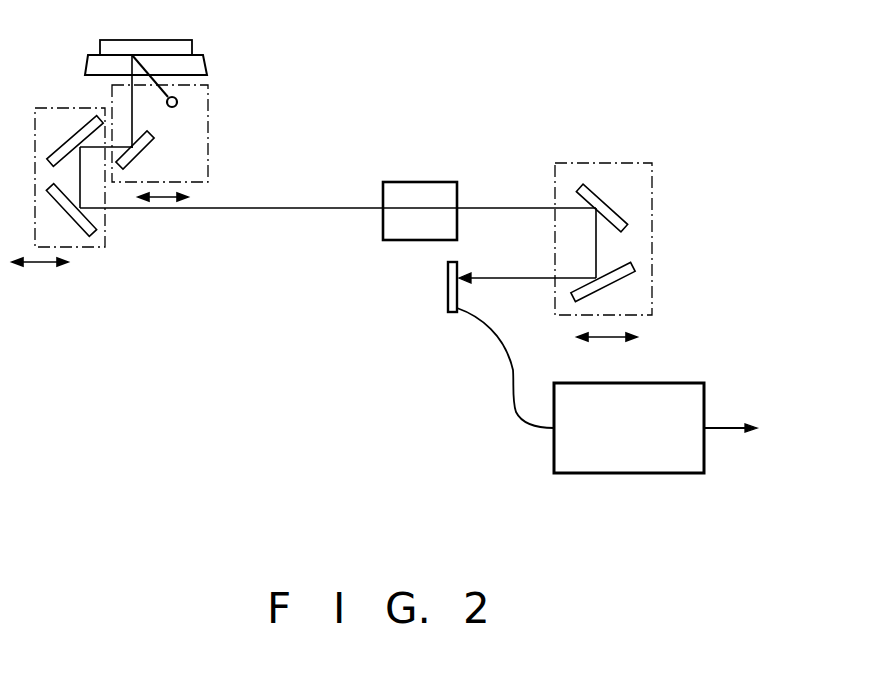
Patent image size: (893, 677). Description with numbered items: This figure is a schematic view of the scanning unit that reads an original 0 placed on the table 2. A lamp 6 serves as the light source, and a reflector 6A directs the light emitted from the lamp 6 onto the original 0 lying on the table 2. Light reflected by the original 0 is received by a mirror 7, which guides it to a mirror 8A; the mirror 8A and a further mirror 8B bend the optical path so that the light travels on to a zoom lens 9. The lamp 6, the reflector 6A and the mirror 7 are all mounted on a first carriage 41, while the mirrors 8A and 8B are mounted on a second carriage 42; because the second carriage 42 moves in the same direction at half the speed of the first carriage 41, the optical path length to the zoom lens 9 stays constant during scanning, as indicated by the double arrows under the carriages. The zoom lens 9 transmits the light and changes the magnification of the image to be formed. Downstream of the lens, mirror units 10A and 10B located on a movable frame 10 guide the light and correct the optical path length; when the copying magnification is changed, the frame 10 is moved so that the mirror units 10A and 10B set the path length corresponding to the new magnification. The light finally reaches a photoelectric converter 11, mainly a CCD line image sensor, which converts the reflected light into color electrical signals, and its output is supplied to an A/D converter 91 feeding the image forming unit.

The original 0 is at (163, 47).
The table 2 is at (197, 54).
The lamp 6 is at (152, 102).
The reflector 6A is at (182, 98).
The mirror 7 is at (152, 152).
The mirror 8A is at (77, 133).
The mirror 8B is at (80, 233).
The zoom lens 9 is at (418, 195).
The movable frame 10 is at (652, 228).
The mirror unit 10A is at (590, 182).
The mirror unit 10B is at (627, 268).
The photoelectric converter 11 is at (463, 277).
The first carriage 41 is at (208, 112).
The second carriage 42 is at (105, 213).
The A/D converter 91 is at (672, 382).